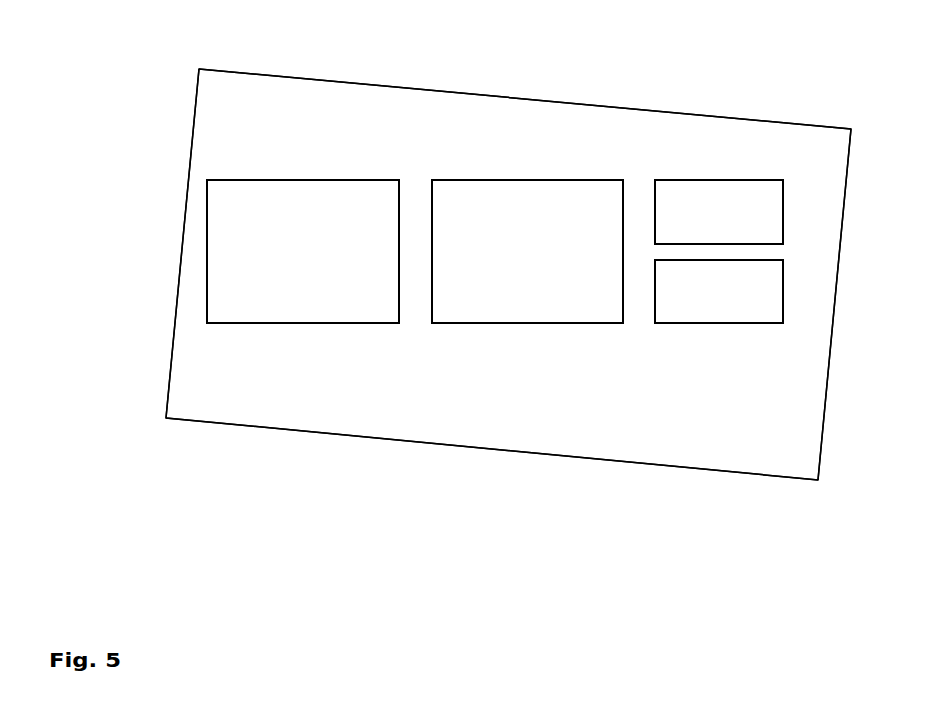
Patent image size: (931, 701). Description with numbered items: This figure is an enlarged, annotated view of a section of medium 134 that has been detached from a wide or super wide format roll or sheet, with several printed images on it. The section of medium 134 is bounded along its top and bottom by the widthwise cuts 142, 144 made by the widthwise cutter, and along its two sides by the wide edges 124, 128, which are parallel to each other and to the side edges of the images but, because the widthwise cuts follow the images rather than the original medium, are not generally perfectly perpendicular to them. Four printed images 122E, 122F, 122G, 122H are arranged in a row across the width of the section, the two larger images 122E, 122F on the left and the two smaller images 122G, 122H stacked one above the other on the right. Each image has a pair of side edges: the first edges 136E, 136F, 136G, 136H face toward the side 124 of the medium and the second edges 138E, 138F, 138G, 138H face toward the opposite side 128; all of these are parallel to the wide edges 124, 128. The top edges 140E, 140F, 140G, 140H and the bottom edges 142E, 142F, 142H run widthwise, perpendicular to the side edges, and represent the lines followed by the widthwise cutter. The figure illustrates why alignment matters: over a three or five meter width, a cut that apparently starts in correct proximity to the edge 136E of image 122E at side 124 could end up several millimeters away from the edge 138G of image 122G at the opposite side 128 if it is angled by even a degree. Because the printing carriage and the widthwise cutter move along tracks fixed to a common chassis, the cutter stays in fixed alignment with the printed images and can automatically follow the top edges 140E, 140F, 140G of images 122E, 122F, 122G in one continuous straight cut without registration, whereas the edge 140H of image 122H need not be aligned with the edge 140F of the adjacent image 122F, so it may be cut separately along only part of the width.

The section of medium 134 is at (530, 434).
The widthwise cut 142 is at (585, 93).
The widthwise cut 144 is at (379, 455).
The side edge of medium 124 is at (164, 312).
The opposite side edge of medium 128 is at (838, 363).
The printed image 122E is at (330, 258).
The printed image 122F is at (538, 256).
The printed image 122G is at (730, 209).
The printed image 122H is at (730, 305).
The first edge of image 122E 136E is at (218, 238).
The first edge of image 122F 136F is at (443, 240).
The first edge of image 122G 136G is at (650, 210).
The first edge of image 122H 136H is at (651, 312).
The second edge of image 122E 138E is at (397, 263).
The second edge of image 122F 138F is at (621, 264).
The second edge of image 122G 138G is at (793, 196).
The second edge of image 122H 138H is at (794, 303).
The top edge of image 122E 140E is at (343, 177).
The top edge of image 122F 140F is at (518, 179).
The top edge of image 122G 140G is at (742, 179).
The top edge of image 122H 140H is at (764, 254).
The bottom edge of image 122E 142E is at (249, 328).
The bottom edge of image 122F 142F is at (473, 329).
The bottom edge of image 122H 142H is at (698, 329).